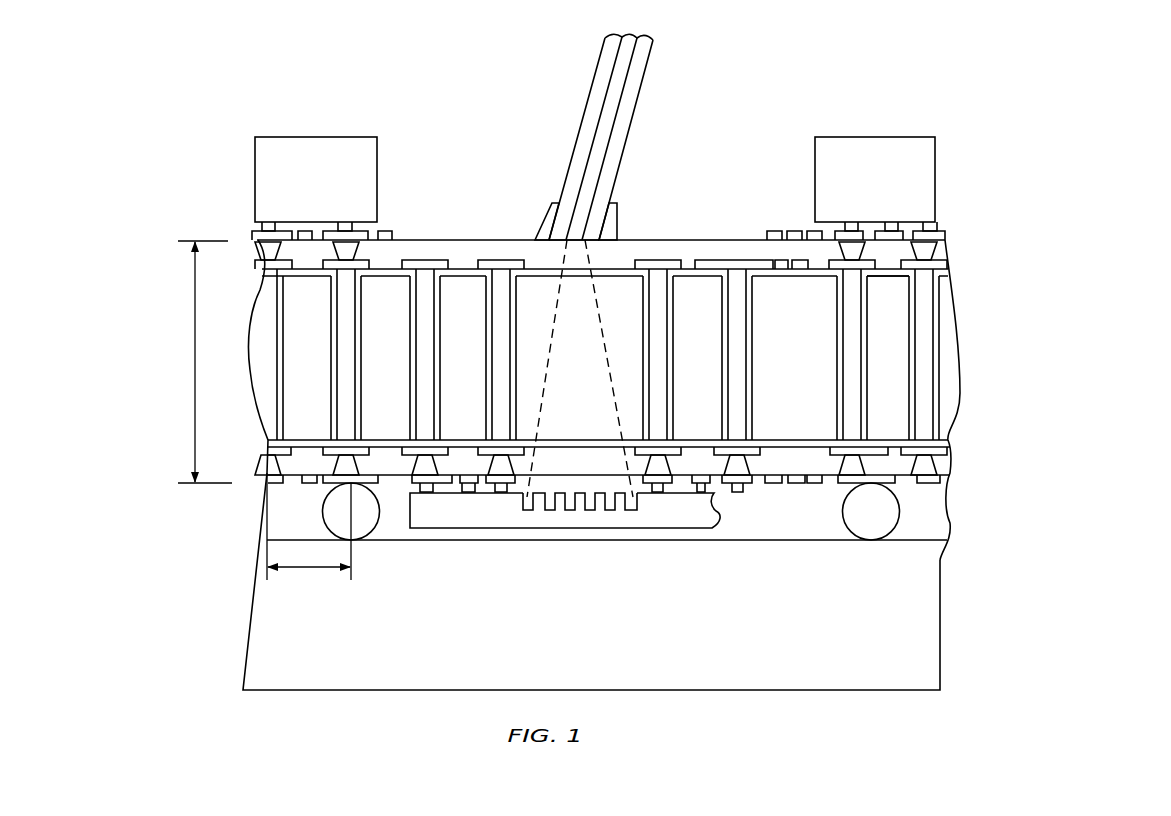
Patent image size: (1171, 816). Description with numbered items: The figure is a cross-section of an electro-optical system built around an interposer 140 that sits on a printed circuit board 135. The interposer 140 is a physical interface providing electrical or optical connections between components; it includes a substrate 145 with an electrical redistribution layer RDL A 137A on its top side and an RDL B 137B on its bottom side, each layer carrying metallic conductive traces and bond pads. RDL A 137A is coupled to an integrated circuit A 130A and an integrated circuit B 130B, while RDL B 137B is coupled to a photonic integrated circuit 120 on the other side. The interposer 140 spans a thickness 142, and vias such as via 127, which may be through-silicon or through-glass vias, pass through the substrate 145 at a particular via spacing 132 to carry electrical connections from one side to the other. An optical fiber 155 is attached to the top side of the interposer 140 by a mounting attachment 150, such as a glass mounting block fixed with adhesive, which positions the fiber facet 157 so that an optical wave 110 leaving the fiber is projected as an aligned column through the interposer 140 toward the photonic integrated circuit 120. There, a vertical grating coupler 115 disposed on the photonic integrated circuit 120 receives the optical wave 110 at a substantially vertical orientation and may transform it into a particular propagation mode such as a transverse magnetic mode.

The optical wave 110 is at (600, 300).
The vertical grating coupler 115 is at (597, 515).
The photonic integrated circuit 120 is at (573, 517).
The via 127 is at (893, 415).
The integrated circuit A 130A is at (296, 212).
The integrated circuit B 130B is at (855, 212).
The via spacing 132 is at (300, 567).
The printed circuit board 135 is at (403, 660).
The RDL A 137A is at (946, 252).
The RDL B 137B is at (960, 463).
The interposer 140 is at (297, 323).
The thickness 142 is at (195, 383).
The substrate 145 is at (778, 378).
The mounting attachment 150 is at (546, 206).
The optical fiber 155 is at (652, 95).
The fiber facet 157 is at (582, 233).